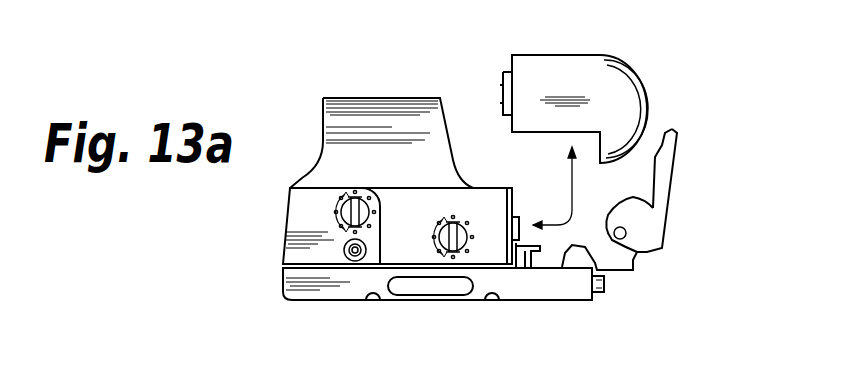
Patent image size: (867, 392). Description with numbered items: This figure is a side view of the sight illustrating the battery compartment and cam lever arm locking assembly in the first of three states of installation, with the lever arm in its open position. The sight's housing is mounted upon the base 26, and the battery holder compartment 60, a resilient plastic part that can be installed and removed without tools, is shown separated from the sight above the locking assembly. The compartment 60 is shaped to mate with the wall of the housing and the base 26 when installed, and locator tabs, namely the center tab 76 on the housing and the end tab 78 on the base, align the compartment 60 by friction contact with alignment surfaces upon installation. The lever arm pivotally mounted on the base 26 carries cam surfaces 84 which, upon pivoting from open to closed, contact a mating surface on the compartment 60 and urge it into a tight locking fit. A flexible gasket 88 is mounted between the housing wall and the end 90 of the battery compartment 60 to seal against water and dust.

The base 26 is at (562, 287).
The battery holder compartment 60 is at (620, 88).
The center tab 76 is at (531, 240).
The end tab 78 is at (606, 288).
The cam surfaces 84 is at (646, 196).
The gasket 88 is at (518, 200).
The end of the battery compartment 90 is at (510, 57).